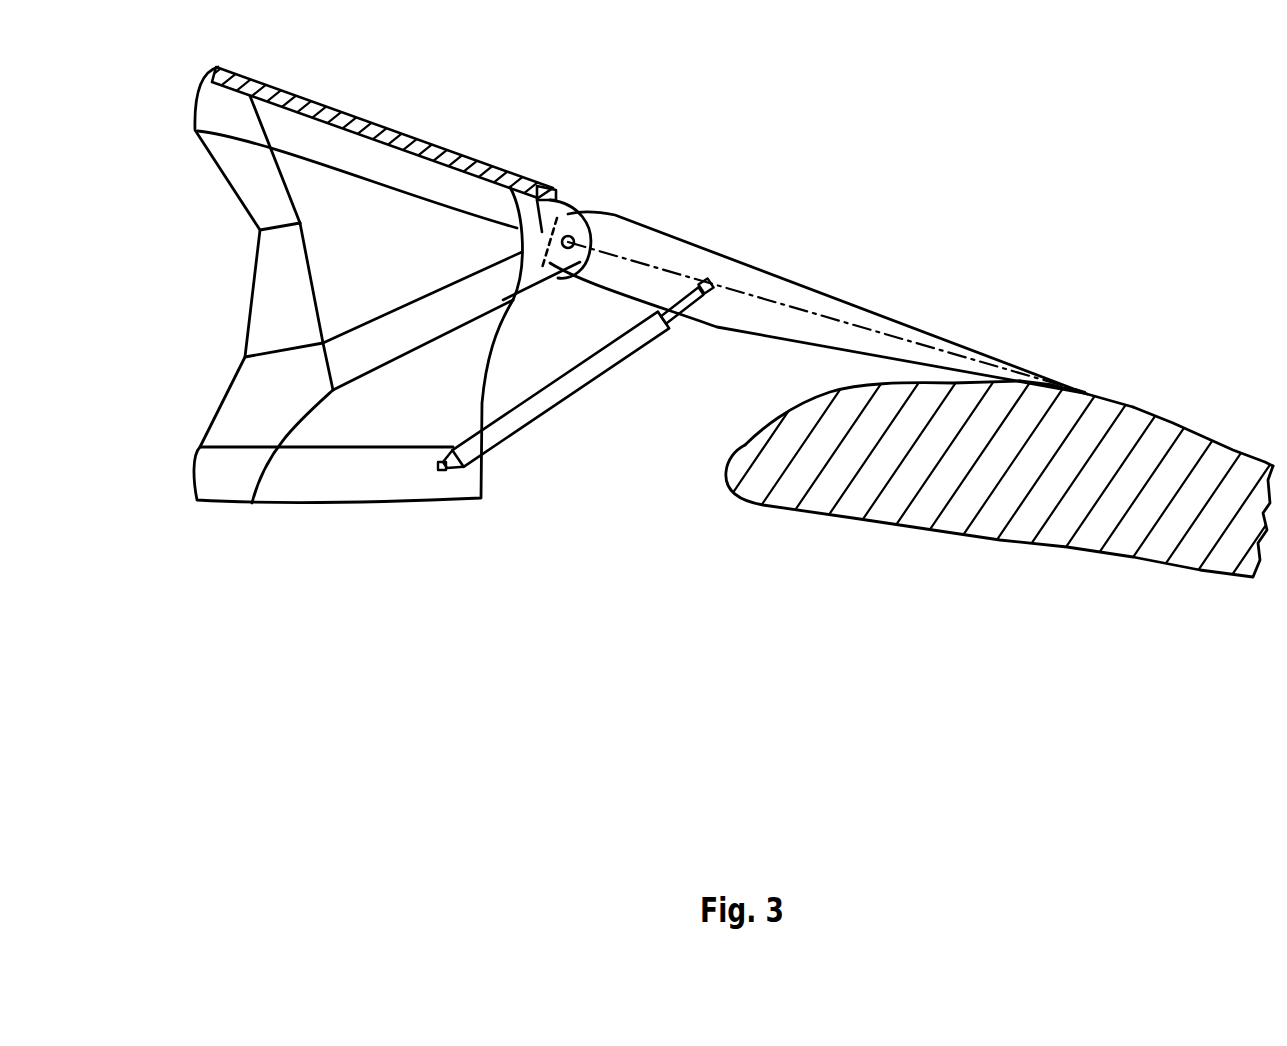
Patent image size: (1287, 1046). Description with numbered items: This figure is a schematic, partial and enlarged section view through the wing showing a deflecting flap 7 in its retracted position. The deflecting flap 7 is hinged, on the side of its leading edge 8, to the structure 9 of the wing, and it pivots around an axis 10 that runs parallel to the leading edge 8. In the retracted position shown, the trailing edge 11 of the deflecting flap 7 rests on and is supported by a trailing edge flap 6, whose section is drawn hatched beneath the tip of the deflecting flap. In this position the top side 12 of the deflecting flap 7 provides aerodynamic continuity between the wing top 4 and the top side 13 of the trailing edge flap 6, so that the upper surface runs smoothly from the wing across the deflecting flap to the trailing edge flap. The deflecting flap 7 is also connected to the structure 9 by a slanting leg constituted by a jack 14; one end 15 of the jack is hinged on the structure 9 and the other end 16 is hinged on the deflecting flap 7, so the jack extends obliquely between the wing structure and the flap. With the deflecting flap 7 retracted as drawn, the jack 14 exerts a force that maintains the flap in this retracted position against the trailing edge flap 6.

The wing top 4 is at (393, 130).
The trailing edge flap 6 is at (1057, 507).
The deflecting flap 7 is at (805, 224).
The leading edge 8 is at (538, 185).
The structure 9 is at (270, 290).
The axis 10 is at (517, 250).
The trailing edge 11 is at (1089, 393).
The top side 12 is at (862, 302).
The top side 13 is at (1174, 421).
The jack 14 is at (563, 398).
The end 15 is at (441, 473).
The end 16 is at (714, 294).